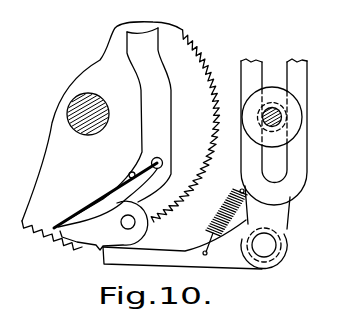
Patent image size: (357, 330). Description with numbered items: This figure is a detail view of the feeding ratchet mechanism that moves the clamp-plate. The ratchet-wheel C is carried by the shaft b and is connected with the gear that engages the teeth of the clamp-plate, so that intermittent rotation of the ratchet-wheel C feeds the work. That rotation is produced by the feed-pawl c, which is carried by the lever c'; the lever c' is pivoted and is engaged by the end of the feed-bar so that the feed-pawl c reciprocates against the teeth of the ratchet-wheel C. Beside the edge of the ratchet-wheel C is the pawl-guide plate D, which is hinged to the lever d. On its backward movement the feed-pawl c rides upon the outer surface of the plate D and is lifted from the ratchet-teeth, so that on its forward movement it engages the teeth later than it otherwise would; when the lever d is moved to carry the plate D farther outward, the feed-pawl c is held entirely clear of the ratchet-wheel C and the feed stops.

The shaft b is at (109, 111).
The lever d is at (114, 126).
The ratchet-wheel C is at (121, 136).
The pawl-guide plate D is at (104, 225).
The feed-pawl c is at (195, 251).
The lever c' is at (274, 144).